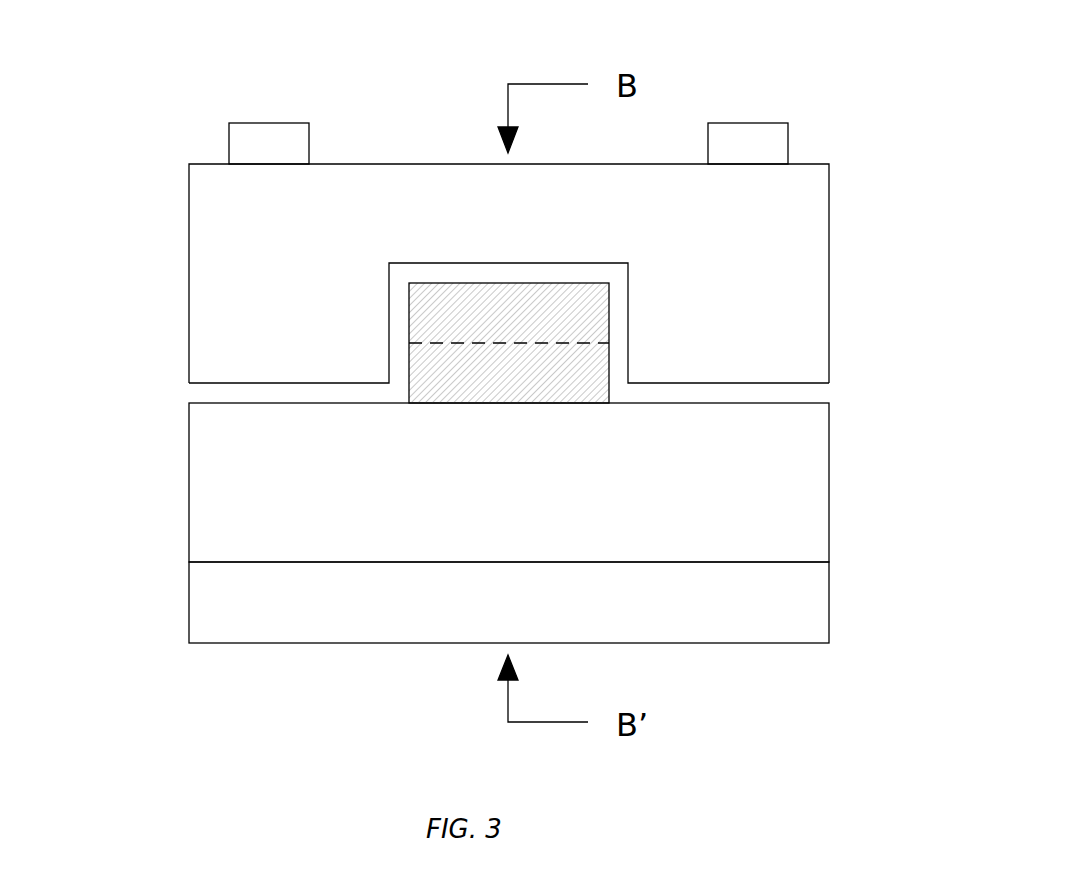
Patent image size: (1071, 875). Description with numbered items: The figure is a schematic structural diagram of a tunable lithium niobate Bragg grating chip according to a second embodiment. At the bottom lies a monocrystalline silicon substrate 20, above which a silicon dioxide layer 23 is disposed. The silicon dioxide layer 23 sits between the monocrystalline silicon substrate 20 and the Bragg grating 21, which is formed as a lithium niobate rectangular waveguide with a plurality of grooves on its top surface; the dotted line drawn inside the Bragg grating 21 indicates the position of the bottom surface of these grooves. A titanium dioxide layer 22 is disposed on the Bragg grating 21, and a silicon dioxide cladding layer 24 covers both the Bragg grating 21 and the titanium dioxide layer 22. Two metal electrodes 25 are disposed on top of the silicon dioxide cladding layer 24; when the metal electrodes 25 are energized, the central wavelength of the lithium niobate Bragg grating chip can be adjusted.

The monocrystalline silicon substrate 20 is at (268, 602).
The Bragg grating 21 is at (572, 323).
The titanium dioxide layer 22 is at (735, 395).
The silicon dioxide layer 23 is at (268, 483).
The silicon dioxide cladding layer 24 is at (268, 283).
The metal electrode 25 is at (250, 153).